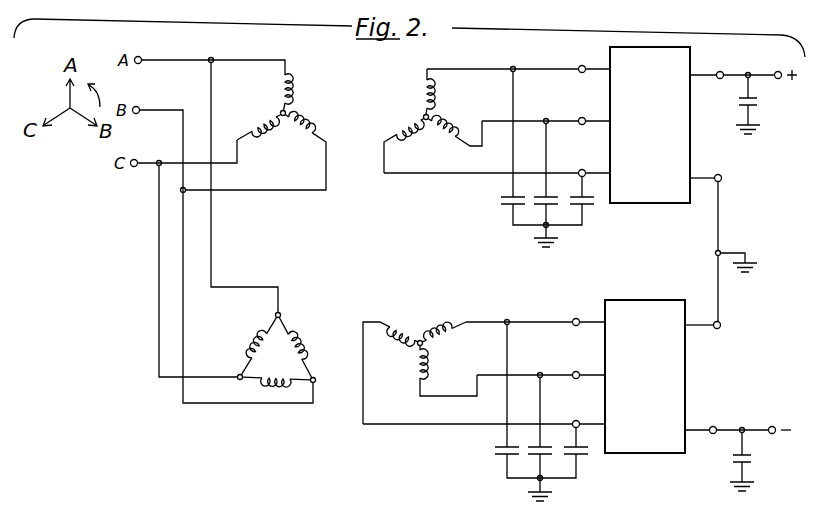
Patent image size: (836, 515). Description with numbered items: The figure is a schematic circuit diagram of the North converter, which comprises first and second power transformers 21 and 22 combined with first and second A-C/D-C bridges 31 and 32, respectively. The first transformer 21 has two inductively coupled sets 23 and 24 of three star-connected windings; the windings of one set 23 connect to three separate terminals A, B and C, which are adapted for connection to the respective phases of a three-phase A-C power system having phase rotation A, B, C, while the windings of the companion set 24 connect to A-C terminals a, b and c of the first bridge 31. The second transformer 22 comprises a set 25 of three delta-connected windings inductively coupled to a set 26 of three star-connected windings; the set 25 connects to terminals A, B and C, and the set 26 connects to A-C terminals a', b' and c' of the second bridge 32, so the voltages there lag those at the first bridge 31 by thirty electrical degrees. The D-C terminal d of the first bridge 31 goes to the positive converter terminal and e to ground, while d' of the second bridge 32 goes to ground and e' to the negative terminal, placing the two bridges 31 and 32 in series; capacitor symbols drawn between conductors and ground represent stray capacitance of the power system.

The first power transformer 21 is at (571, 183).
The second power transformer 22 is at (561, 399).
The set of three star-connected windings 23 is at (290, 153).
The companion set of three star-connected windings 24 is at (437, 158).
The set of three delta-connected windings 25 is at (285, 364).
The set of three star-connected windings 26 is at (430, 319).
The first A-C/D-C bridge 31 is at (647, 204).
The second A-C/D-C bridge 32 is at (643, 454).